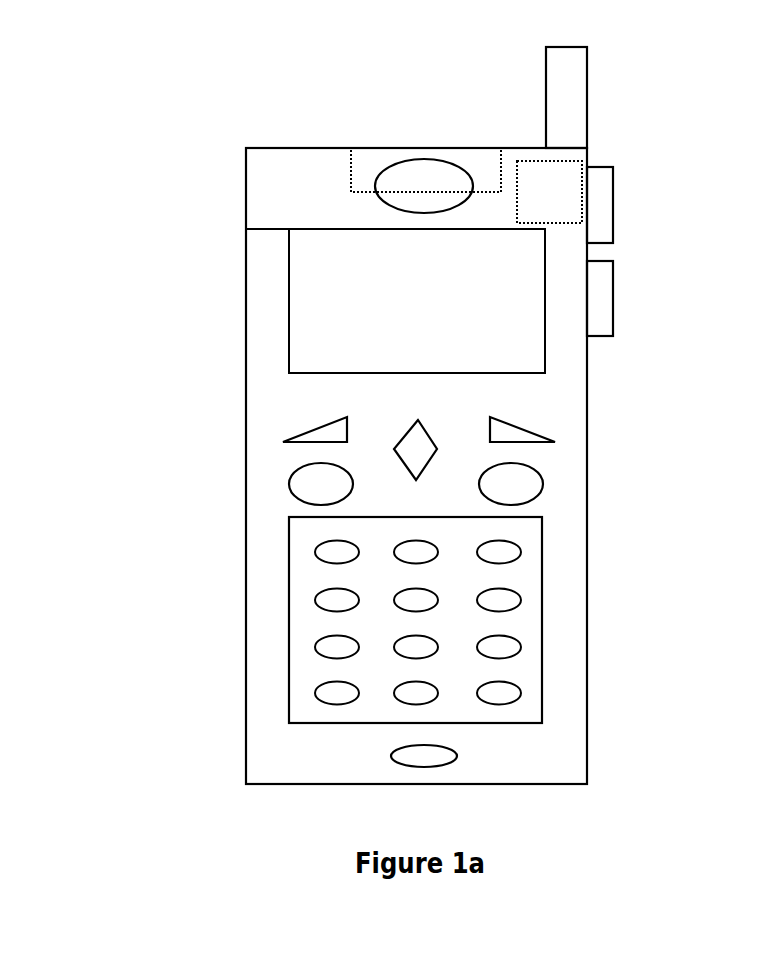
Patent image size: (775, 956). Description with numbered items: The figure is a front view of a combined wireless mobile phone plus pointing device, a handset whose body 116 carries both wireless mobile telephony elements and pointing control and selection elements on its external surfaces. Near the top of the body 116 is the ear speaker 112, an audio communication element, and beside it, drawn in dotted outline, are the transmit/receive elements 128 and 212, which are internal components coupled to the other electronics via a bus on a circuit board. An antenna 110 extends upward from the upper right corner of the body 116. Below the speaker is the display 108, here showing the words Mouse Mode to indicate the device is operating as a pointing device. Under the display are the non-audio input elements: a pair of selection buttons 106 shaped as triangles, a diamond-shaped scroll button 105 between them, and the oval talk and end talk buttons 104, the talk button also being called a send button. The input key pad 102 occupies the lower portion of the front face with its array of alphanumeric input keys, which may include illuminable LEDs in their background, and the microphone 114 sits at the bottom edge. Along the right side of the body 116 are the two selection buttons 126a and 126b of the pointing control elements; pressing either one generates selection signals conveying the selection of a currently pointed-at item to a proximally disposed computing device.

The input key pad 102 is at (310, 580).
The talk and end talk buttons 104 is at (290, 481).
The scroll button 105 is at (415, 437).
The selection buttons 106 is at (290, 440).
The display 108 is at (246, 229).
The antenna 110 is at (585, 60).
The ear speaker 112 is at (390, 185).
The microphone 114 is at (405, 745).
The body 116 is at (245, 352).
The selection button 126a is at (597, 215).
The selection button 126b is at (603, 298).
The transmit/receive 128 is at (387, 163).
The transmit/receive 212 is at (543, 170).